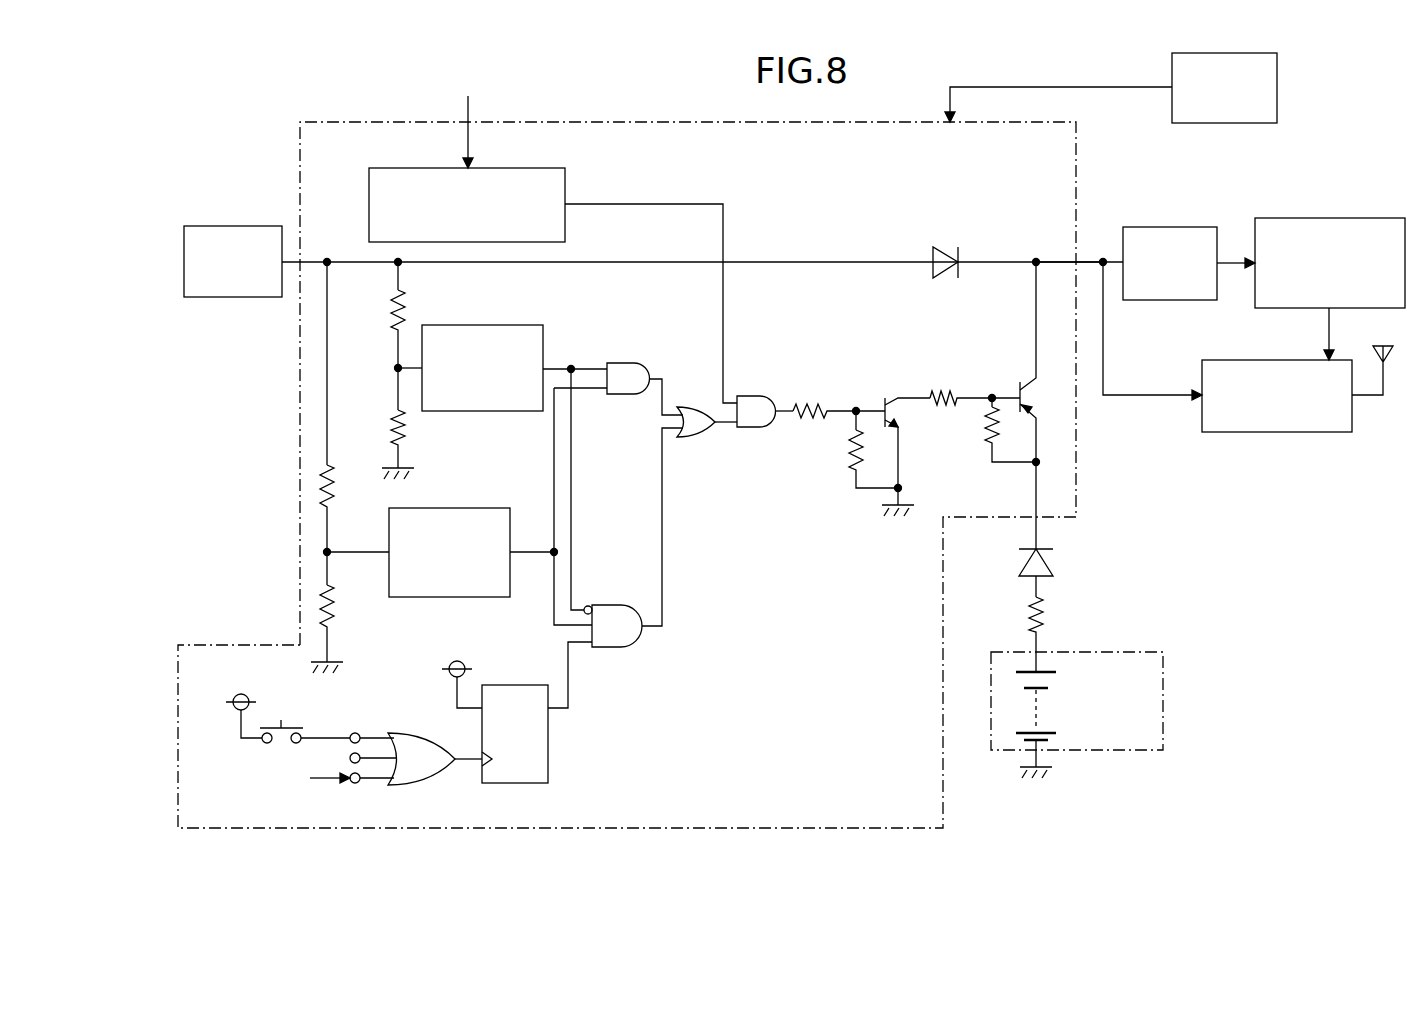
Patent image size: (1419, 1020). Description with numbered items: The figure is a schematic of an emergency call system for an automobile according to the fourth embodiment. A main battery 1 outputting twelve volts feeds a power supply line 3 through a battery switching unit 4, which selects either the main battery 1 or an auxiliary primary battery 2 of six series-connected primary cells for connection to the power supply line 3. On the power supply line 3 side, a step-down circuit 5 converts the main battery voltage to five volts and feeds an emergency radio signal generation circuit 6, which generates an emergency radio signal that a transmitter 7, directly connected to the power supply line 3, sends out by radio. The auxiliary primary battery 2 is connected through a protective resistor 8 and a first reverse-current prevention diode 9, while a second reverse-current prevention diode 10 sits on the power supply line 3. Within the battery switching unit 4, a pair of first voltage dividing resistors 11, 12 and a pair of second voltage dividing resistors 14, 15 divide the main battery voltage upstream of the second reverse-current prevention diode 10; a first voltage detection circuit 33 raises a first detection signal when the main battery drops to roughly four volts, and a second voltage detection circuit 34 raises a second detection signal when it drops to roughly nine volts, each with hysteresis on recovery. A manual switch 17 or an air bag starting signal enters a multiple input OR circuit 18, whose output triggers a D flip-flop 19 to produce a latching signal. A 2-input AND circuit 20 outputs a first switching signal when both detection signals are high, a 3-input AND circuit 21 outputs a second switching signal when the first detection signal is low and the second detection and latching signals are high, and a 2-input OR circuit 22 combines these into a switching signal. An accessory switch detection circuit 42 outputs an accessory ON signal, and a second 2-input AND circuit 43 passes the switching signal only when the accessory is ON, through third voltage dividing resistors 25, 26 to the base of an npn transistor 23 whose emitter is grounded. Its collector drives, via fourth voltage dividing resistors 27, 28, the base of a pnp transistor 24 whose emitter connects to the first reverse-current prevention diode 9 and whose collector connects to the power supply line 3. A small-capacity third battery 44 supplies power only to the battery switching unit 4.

The main battery 1 is at (232, 225).
The auxiliary primary battery 2 is at (1165, 702).
The power supply line 3 is at (1060, 260).
The battery switching unit 4 is at (1079, 157).
The step-down circuit 5 is at (1170, 227).
The emergency radio signal generation circuit 6 is at (1330, 218).
The transmitter 7 is at (1275, 433).
The protective resistor 8 is at (1049, 612).
The first reverse-current prevention diode 9 is at (1052, 560).
The second reverse-current prevention diode 10 is at (949, 245).
The first voltage dividing resistor 11 is at (381, 312).
The first voltage dividing resistor 12 is at (381, 428).
The second voltage dividing resistor 14 is at (336, 497).
The second voltage dividing resistor 15 is at (336, 620).
The manual switch 17 is at (278, 716).
The multiple input OR circuit 18 is at (418, 733).
The D flip-flop 19 is at (515, 685).
The 2-input AND circuit 20 is at (624, 363).
The 3-input AND circuit 21 is at (613, 605).
The 2-input OR circuit 22 is at (690, 407).
The npn transistor 23 is at (904, 437).
The pnp transistor 24 is at (1044, 400).
The third voltage dividing resistor 25 is at (810, 400).
The third voltage dividing resistor 26 is at (839, 452).
The fourth voltage dividing resistor 27 is at (945, 387).
The fourth voltage dividing resistor 28 is at (975, 428).
The first voltage detection circuit 33 is at (482, 325).
The second voltage detection circuit 34 is at (462, 508).
The accessory switch detection circuit 42 is at (530, 168).
The second 2-input AND circuit 43 is at (750, 396).
The third battery 44 is at (1278, 92).